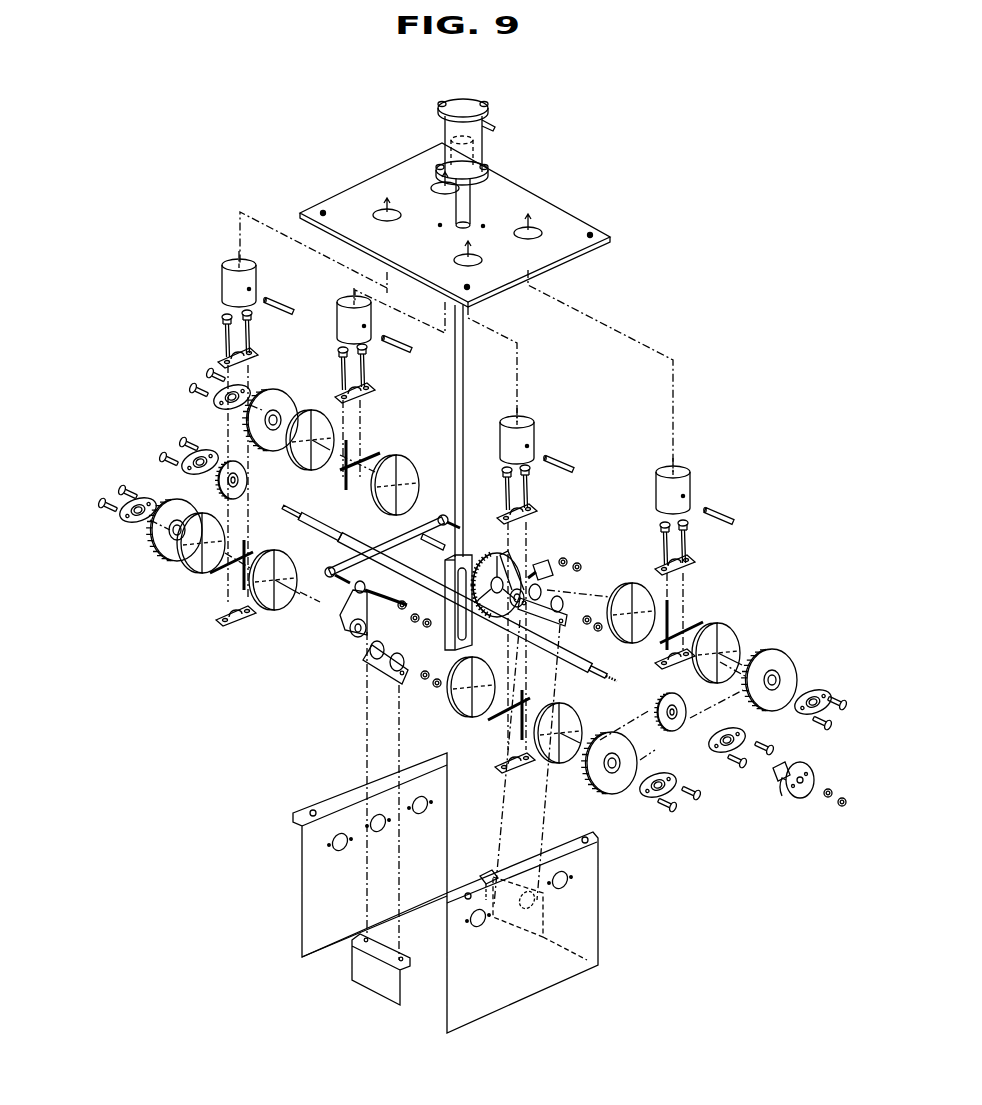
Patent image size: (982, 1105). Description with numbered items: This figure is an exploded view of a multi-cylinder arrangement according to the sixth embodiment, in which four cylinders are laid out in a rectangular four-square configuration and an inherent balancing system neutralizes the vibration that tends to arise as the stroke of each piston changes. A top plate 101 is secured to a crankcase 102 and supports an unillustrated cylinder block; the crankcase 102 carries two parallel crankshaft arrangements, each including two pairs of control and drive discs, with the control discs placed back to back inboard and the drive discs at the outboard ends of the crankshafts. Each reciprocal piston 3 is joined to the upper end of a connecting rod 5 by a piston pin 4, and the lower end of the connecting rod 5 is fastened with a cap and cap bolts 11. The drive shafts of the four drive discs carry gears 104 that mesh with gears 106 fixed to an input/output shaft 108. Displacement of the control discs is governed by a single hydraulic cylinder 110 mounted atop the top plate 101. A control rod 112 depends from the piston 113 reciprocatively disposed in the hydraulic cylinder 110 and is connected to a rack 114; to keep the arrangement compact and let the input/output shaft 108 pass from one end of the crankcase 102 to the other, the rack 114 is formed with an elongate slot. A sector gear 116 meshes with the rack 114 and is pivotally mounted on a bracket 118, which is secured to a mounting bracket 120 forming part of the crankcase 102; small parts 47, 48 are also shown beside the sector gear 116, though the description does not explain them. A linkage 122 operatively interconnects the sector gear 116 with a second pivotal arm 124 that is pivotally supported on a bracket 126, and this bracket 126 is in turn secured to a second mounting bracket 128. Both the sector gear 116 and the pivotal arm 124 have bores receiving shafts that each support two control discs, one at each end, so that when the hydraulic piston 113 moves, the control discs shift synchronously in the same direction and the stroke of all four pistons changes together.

The piston 3 is at (223, 283).
The piston pin 4 is at (274, 309).
The connecting rod 5 is at (232, 340).
The cap bolts 11 is at (505, 472).
The pawl 47 is at (525, 575).
The pawl pin block 48 is at (547, 560).
The top plate 101 is at (528, 202).
The crankcase 102 is at (582, 928).
The gears 104 is at (283, 408).
The gears 106 is at (232, 488).
The input/output shaft 108 is at (550, 638).
The hydraulic cylinder 110 is at (452, 132).
The control rod 112 is at (457, 204).
The piston 113 is at (472, 155).
The rack 114 is at (447, 624).
The sector gear 116 is at (480, 558).
The bracket 118 is at (557, 610).
The mounting bracket 120 is at (487, 875).
The linkage 122 is at (410, 527).
The pivotal arm 124 is at (347, 633).
The bracket 126 is at (372, 672).
The mounting bracket 128 is at (377, 947).